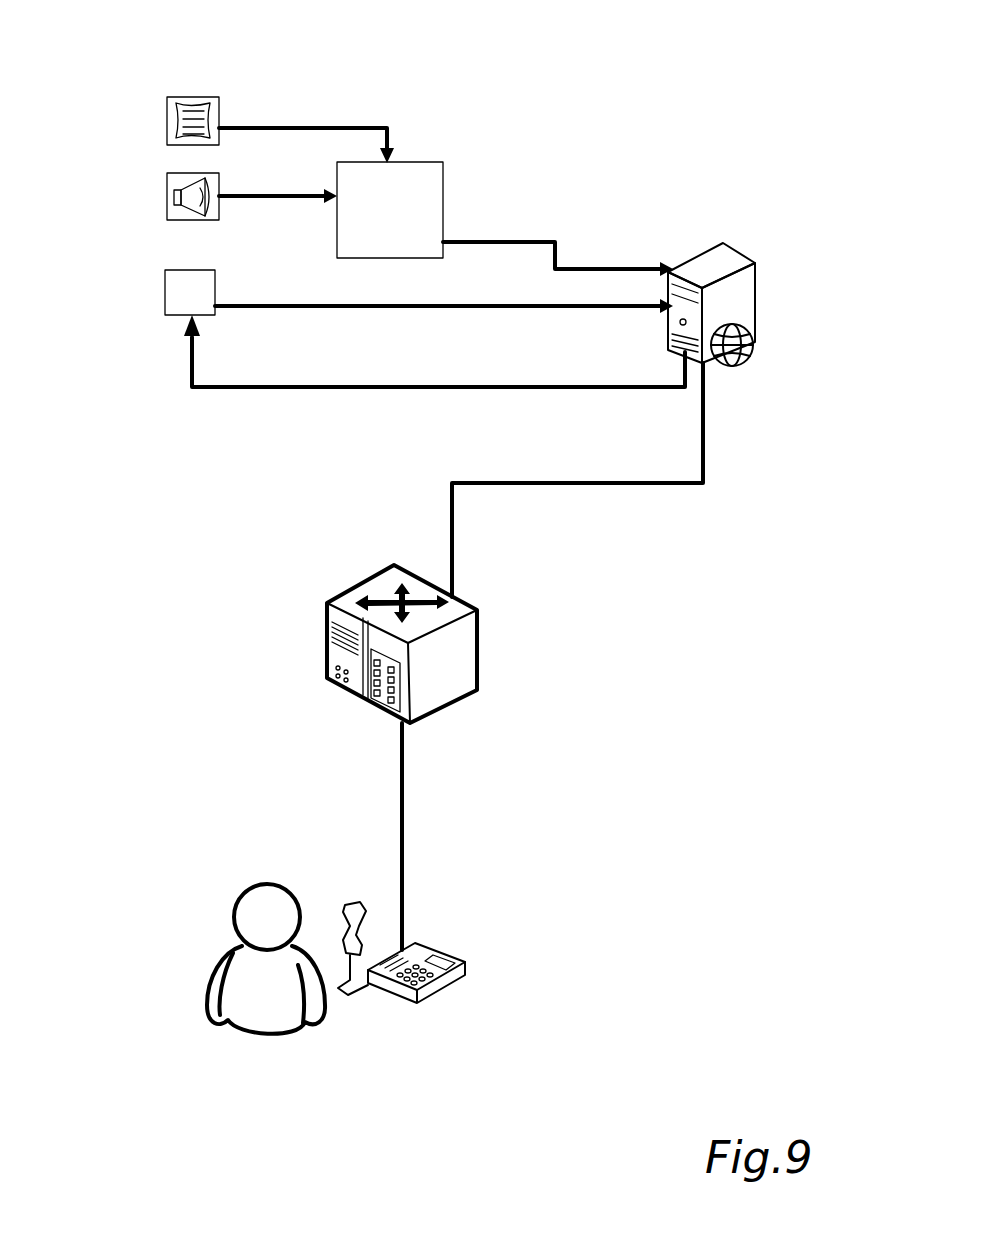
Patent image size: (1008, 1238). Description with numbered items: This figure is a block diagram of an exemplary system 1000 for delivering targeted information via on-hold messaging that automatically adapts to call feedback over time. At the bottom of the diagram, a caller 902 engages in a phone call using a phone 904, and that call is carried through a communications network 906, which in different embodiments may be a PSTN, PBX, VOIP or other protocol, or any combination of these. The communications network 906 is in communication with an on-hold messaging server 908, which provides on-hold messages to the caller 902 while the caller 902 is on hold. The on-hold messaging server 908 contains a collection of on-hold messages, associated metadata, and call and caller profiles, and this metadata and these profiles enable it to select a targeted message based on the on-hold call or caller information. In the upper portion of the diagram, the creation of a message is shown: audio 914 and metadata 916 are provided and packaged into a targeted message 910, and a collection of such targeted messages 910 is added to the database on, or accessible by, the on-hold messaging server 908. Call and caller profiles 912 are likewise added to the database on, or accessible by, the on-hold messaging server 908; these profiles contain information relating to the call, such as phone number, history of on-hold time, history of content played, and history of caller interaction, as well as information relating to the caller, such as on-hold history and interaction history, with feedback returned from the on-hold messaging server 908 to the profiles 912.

The communication system 1000 is at (733, 31).
The caller 902 is at (238, 895).
The phone 904 is at (443, 952).
The communications network 906 is at (327, 637).
The on-hold messaging server 908 is at (745, 255).
The targeted message 910 is at (371, 221).
The call and caller profiles 912 is at (165, 272).
The audio 914 is at (167, 192).
The metadata 916 is at (167, 116).